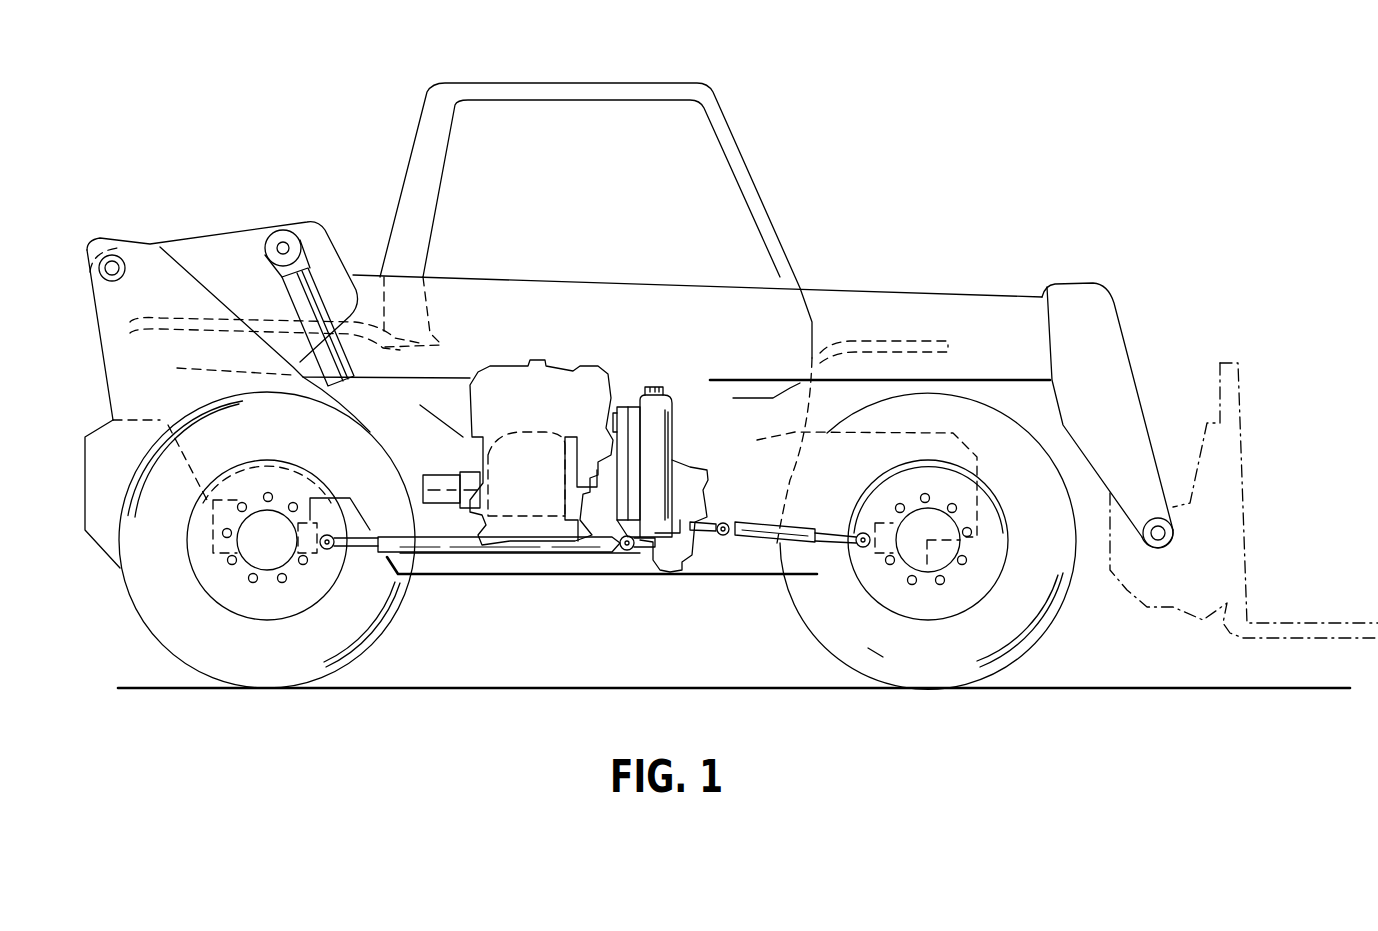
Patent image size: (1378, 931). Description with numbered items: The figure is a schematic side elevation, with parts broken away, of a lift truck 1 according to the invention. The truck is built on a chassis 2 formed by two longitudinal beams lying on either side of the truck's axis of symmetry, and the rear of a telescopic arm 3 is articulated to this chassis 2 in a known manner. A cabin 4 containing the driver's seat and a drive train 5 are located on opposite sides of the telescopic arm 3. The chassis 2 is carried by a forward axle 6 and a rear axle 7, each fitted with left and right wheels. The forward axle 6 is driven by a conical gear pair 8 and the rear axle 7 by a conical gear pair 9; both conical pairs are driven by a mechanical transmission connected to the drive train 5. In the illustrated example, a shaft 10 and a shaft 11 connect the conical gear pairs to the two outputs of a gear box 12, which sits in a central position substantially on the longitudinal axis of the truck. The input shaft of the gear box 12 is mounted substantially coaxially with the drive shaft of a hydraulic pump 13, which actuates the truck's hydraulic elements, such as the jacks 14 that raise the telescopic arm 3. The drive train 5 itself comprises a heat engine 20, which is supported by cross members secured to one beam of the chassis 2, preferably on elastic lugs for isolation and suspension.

The lift truck 1 is at (860, 230).
The chassis 2 is at (589, 583).
The telescopic arm 3 is at (954, 305).
The cabin 4 is at (768, 200).
The drive train 5 is at (591, 362).
The forward axle 6 is at (950, 567).
The rear axle 7 is at (240, 570).
The conical gear pair 8 is at (877, 560).
The conical gear pair 9 is at (317, 553).
The shaft 10 is at (505, 553).
The shaft 11 is at (770, 547).
The gear box 12 is at (710, 490).
The hydraulic pump 13 is at (408, 477).
The jacks 14 is at (303, 295).
The heat engine 20 is at (526, 393).